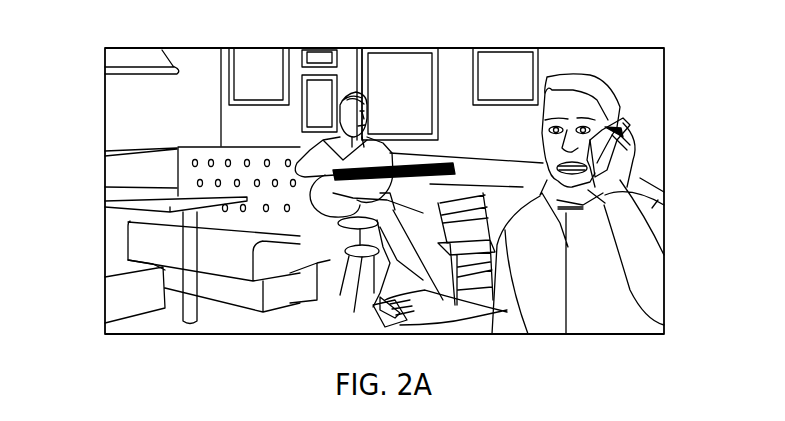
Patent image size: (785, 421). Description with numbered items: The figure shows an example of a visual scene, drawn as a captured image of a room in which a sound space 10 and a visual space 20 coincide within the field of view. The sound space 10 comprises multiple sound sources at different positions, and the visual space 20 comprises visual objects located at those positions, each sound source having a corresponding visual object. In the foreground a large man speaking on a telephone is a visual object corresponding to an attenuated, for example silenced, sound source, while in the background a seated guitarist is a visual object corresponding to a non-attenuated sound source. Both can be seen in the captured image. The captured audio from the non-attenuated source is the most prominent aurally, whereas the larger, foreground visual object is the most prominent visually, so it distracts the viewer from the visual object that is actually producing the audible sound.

The sound space 10 is at (106, 332).
The visual space 20 is at (128, 335).